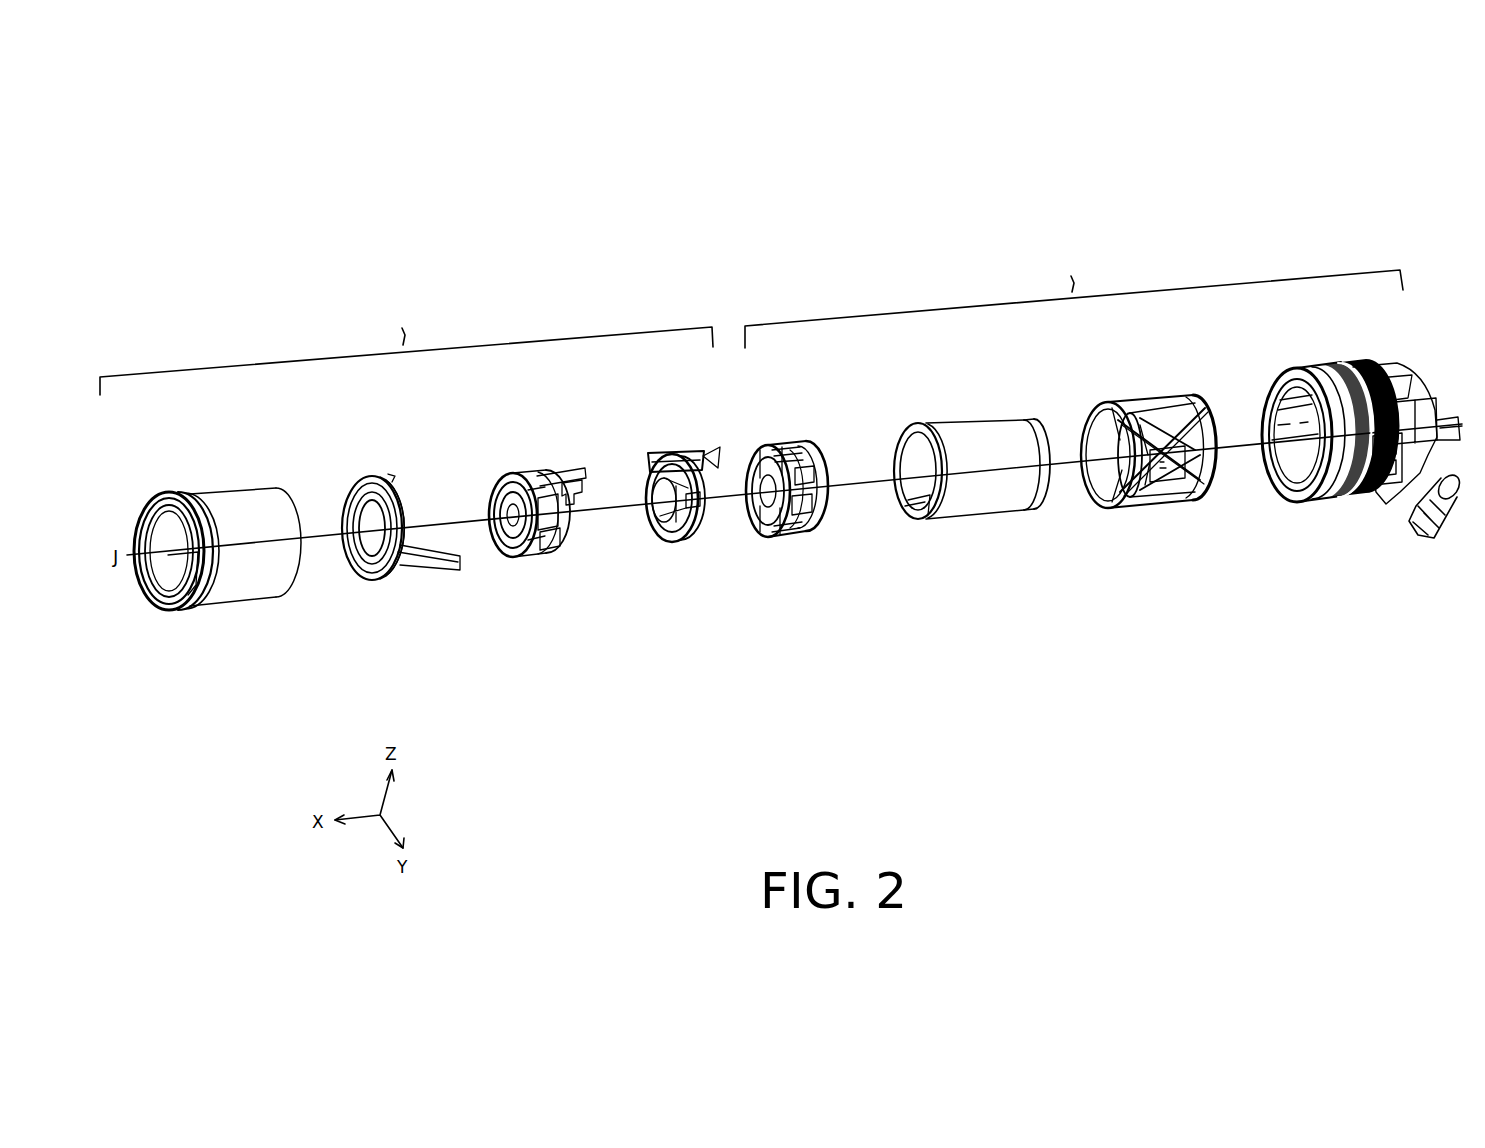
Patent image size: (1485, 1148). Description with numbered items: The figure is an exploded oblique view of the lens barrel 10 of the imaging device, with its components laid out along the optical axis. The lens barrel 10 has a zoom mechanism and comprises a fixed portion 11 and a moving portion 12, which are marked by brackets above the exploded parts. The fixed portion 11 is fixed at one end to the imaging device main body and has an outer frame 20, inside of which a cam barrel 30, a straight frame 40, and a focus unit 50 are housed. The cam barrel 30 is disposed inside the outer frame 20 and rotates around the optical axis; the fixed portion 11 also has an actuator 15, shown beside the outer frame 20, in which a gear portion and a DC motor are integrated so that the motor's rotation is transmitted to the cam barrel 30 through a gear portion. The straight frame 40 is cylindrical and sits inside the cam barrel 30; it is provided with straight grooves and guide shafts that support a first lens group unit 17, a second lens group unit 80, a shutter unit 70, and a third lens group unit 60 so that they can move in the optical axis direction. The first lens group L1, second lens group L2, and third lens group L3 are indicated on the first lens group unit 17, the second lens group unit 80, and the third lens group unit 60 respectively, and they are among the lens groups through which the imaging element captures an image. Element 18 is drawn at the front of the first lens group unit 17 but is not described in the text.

The lens barrel 10 is at (1380, 162).
The fixed portion 11 is at (1074, 292).
The moving portion 12 is at (406, 343).
The actuator 15 is at (1430, 540).
The first lens group unit 17 is at (213, 502).
The lens ring 18 is at (149, 492).
The outer frame 20 is at (1352, 347).
The cam barrel 30 is at (1120, 400).
The straight frame 40 is at (960, 422).
The focus unit 50 is at (780, 440).
The third lens group unit 60 is at (670, 449).
The shutter unit 70 is at (547, 466).
The second lens group unit 80 is at (365, 476).
The first lens group L1 is at (166, 588).
The second lens group L2 is at (356, 560).
The third lens group L3 is at (655, 510).